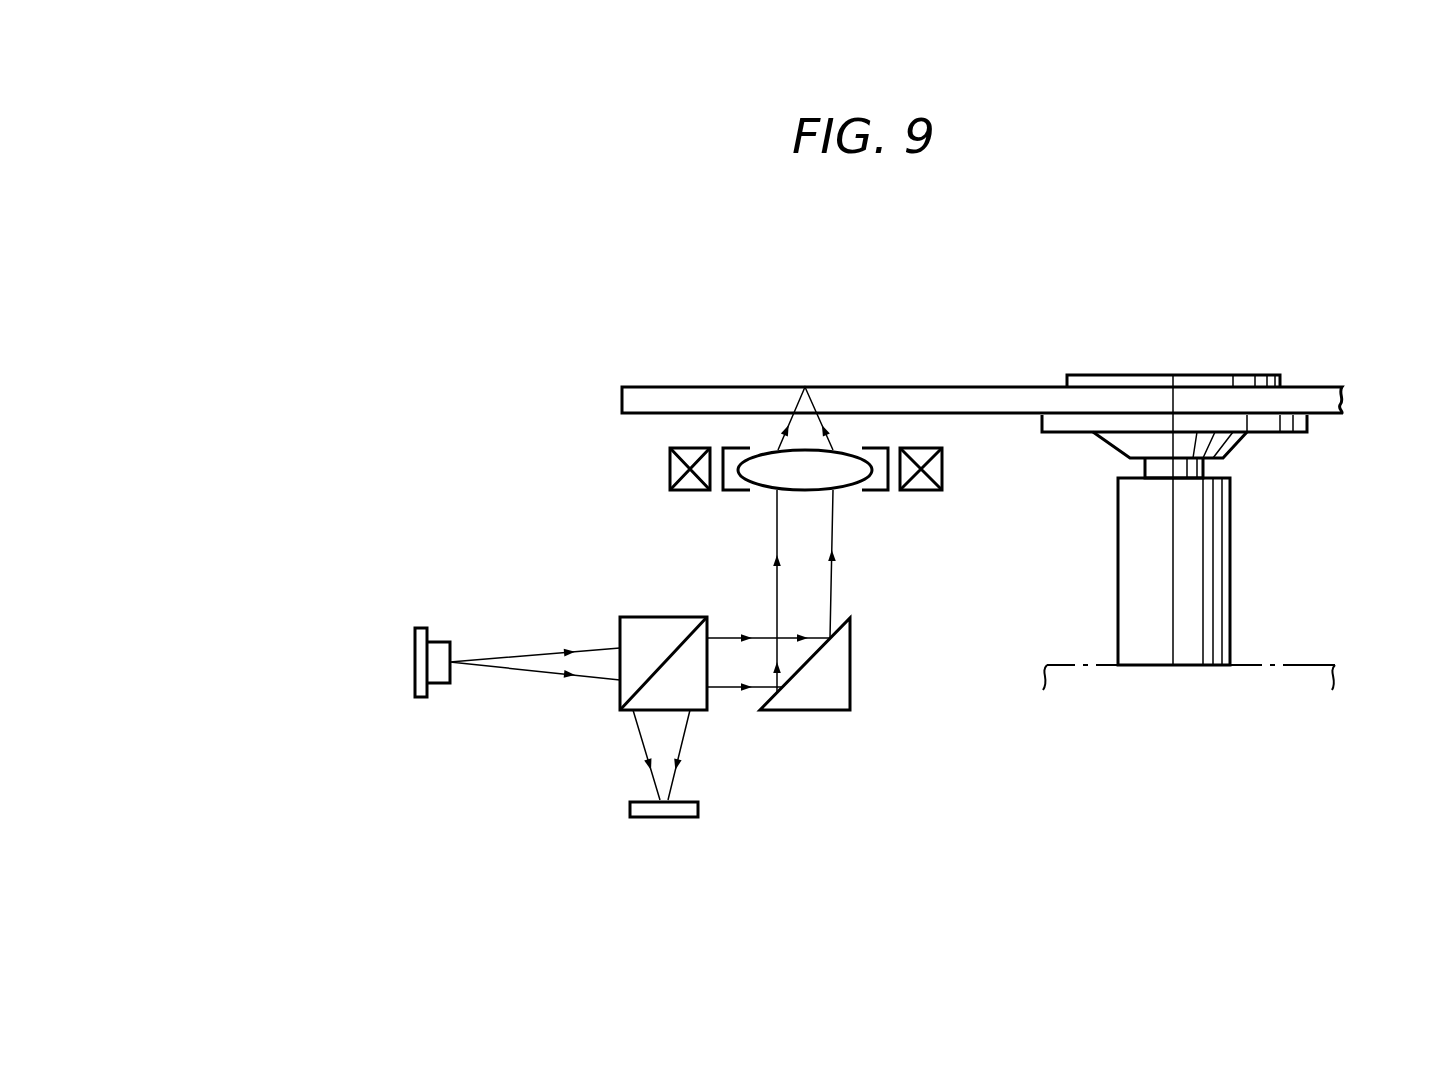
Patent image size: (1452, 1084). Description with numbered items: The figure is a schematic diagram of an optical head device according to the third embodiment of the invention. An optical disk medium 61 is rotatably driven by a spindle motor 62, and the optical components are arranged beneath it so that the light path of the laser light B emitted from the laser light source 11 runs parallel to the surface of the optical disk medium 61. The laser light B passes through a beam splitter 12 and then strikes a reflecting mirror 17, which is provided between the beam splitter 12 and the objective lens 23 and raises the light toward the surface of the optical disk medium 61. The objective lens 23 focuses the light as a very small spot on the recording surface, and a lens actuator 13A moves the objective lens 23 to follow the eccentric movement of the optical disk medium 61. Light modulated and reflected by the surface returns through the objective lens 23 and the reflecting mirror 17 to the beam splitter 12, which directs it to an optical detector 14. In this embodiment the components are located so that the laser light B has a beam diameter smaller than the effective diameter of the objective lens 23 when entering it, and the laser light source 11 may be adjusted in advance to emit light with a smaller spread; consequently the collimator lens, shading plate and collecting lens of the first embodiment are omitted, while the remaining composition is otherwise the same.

The optical disk medium 61 is at (702, 387).
The spindle motor 62 is at (1230, 580).
The objective lens 23 is at (845, 457).
The lens actuator 13A is at (920, 492).
The beam splitter 12 is at (648, 620).
The laser light source 11 is at (415, 667).
The laser light B is at (528, 672).
The reflecting mirror 17 is at (850, 688).
The optical detector 14 is at (678, 817).